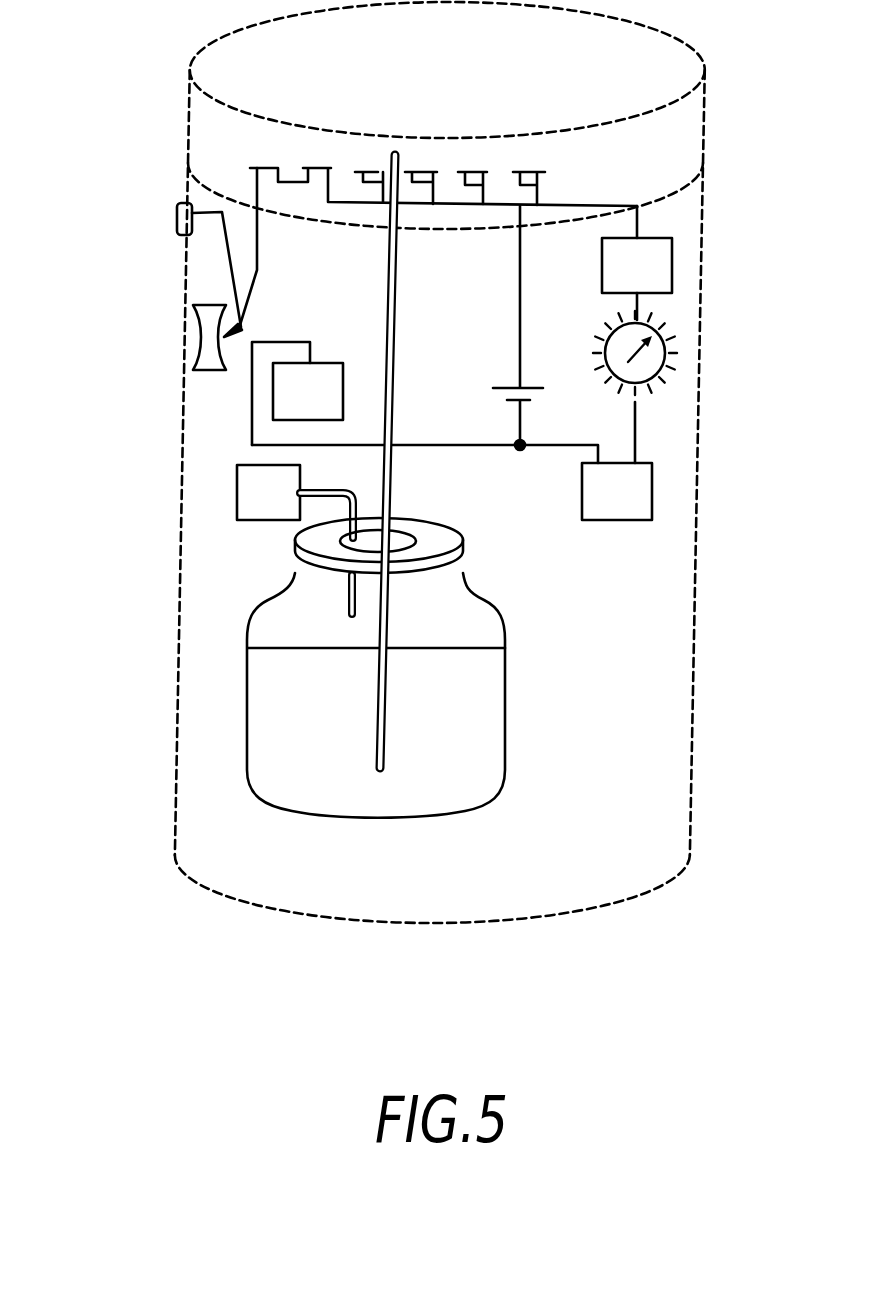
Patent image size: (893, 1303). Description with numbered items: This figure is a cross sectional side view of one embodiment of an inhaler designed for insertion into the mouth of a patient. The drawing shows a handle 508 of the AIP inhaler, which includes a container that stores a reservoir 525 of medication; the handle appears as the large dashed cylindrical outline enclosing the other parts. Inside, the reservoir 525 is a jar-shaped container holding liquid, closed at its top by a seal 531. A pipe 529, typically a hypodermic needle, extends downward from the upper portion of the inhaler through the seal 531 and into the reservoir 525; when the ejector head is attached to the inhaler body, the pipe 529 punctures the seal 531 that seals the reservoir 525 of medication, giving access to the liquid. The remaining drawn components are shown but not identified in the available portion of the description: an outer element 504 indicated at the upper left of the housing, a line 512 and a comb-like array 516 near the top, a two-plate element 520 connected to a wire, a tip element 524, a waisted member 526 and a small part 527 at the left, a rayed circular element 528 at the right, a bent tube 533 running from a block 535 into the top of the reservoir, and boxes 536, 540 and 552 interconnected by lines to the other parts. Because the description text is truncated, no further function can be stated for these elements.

The cartridge housing 504 is at (192, 108).
The handle 508 is at (184, 499).
The conductor wire 512 is at (258, 262).
The heating element array 516 is at (266, 168).
The battery 520 is at (500, 328).
The nozzle 524 is at (262, 326).
The reservoir 525 is at (376, 695).
The valve 526 is at (195, 325).
The actuator 527 is at (175, 218).
The indicator lamp 528 is at (660, 333).
The pipe 529 is at (394, 485).
The seal 531 is at (415, 533).
The tube 533 is at (310, 488).
The pump 535 is at (268, 492).
The controller 536 is at (637, 263).
The control unit 540 is at (297, 393).
The sensor 552 is at (617, 491).